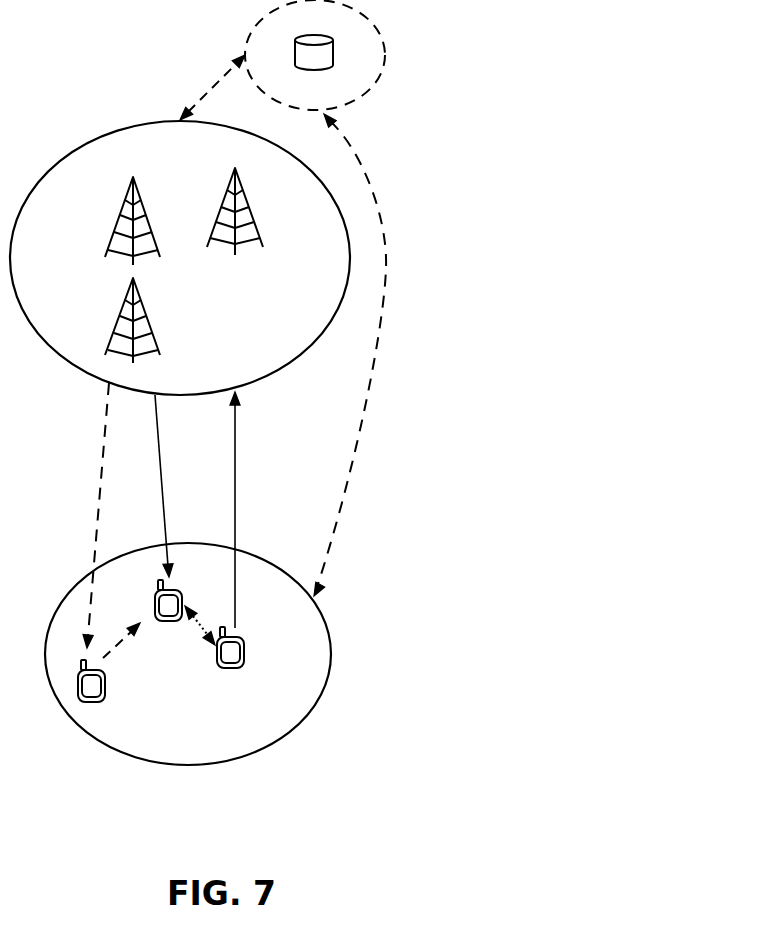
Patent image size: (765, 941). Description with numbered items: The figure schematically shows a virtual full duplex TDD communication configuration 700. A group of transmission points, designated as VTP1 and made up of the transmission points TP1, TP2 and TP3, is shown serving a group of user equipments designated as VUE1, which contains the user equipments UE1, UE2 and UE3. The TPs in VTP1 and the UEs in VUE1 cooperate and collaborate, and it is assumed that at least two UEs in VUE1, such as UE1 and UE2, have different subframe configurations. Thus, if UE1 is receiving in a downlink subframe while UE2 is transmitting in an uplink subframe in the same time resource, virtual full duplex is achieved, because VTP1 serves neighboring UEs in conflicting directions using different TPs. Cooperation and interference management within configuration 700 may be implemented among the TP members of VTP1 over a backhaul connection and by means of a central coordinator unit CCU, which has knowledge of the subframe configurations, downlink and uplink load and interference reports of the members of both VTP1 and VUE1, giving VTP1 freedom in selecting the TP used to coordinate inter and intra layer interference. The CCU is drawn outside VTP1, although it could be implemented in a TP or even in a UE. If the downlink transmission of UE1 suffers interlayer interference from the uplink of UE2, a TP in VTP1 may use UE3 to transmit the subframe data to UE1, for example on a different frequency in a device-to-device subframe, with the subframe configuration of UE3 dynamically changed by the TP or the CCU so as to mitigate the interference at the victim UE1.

The virtual full duplex TDD communication configuration 700 is at (123, 71).
The central coordinator unit CCU is at (346, 55).
The group of TPs VTP1 is at (180, 260).
The transmission point TP1 is at (97, 221).
The transmission point TP2 is at (255, 211).
The transmission point TP3 is at (107, 320).
The group of UEs VUE1 is at (188, 668).
The user equipment UE1 is at (141, 592).
The user equipment UE2 is at (254, 655).
The user equipment UE3 is at (107, 694).